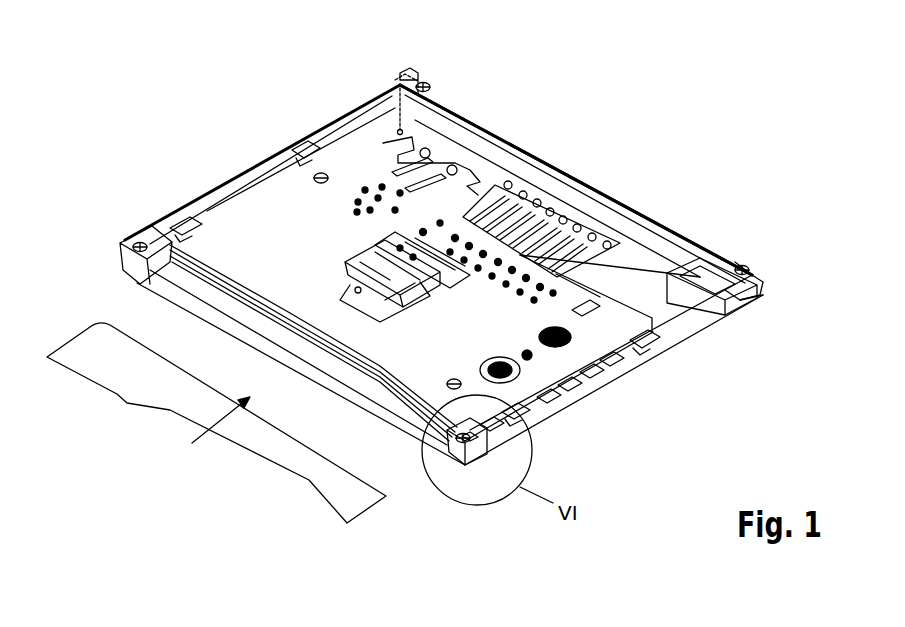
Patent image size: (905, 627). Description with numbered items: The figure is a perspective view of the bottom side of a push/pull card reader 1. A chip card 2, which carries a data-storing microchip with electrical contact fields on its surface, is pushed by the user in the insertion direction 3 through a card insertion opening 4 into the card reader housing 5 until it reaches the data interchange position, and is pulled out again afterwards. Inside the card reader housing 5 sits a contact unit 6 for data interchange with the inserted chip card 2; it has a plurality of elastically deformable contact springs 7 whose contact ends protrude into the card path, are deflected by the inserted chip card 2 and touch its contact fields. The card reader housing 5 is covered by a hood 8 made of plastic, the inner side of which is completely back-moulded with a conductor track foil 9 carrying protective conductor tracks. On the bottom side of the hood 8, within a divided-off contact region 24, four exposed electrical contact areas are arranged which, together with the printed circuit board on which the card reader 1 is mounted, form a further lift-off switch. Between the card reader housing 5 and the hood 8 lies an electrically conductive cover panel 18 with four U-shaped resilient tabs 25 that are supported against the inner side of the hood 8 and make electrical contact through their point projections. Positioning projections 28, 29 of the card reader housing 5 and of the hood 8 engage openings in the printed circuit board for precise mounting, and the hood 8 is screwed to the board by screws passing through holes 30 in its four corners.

The card reader 1 is at (244, 105).
The chip card 2 is at (120, 388).
The insertion direction 3 is at (218, 420).
The card insertion opening 4 is at (163, 284).
The card reader housing 5 is at (263, 204).
The contact unit 6 is at (473, 305).
The contact springs 7 is at (415, 250).
The hood 8 is at (518, 148).
The conductor track foil 9 is at (620, 284).
The cover panel 18 is at (180, 265).
The contact region 24 is at (747, 292).
The resilient tabs 25 is at (303, 150).
The positioning projections 28 is at (322, 172).
The positioning projections 29 is at (407, 72).
The holes 30 is at (425, 80).